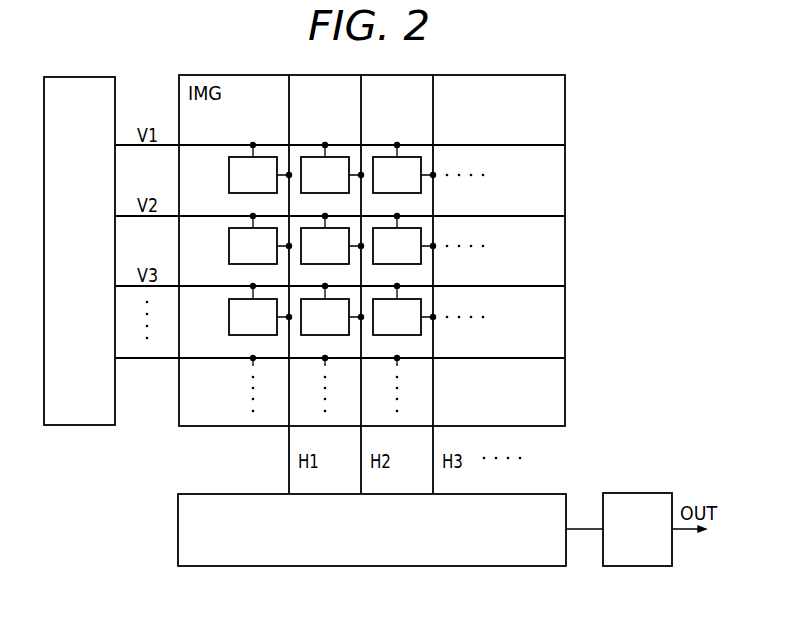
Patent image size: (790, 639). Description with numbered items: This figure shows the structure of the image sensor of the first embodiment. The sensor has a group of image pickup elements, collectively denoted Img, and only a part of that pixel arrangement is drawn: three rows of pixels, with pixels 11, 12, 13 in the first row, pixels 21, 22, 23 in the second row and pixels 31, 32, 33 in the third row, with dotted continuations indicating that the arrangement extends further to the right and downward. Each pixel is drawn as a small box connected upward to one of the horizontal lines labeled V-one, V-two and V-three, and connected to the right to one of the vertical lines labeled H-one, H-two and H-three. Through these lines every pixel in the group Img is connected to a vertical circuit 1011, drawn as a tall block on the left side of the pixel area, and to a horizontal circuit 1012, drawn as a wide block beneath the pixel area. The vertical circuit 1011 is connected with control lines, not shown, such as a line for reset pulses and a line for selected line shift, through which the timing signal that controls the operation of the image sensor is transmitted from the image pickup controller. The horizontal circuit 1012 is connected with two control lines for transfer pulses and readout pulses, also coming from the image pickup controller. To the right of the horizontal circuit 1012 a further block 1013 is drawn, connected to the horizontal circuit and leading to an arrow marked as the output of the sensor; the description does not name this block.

The vertical circuit 1011 is at (84, 77).
The horizontal circuit 1012 is at (240, 494).
The output circuit 1013 is at (639, 493).
The pixel 11 is at (259, 169).
The pixel 12 is at (331, 169).
The pixel 13 is at (403, 169).
The pixel 21 is at (259, 240).
The pixel 22 is at (331, 240).
The pixel 23 is at (403, 240).
The pixel 31 is at (259, 310).
The pixel 32 is at (331, 310).
The pixel 33 is at (403, 310).